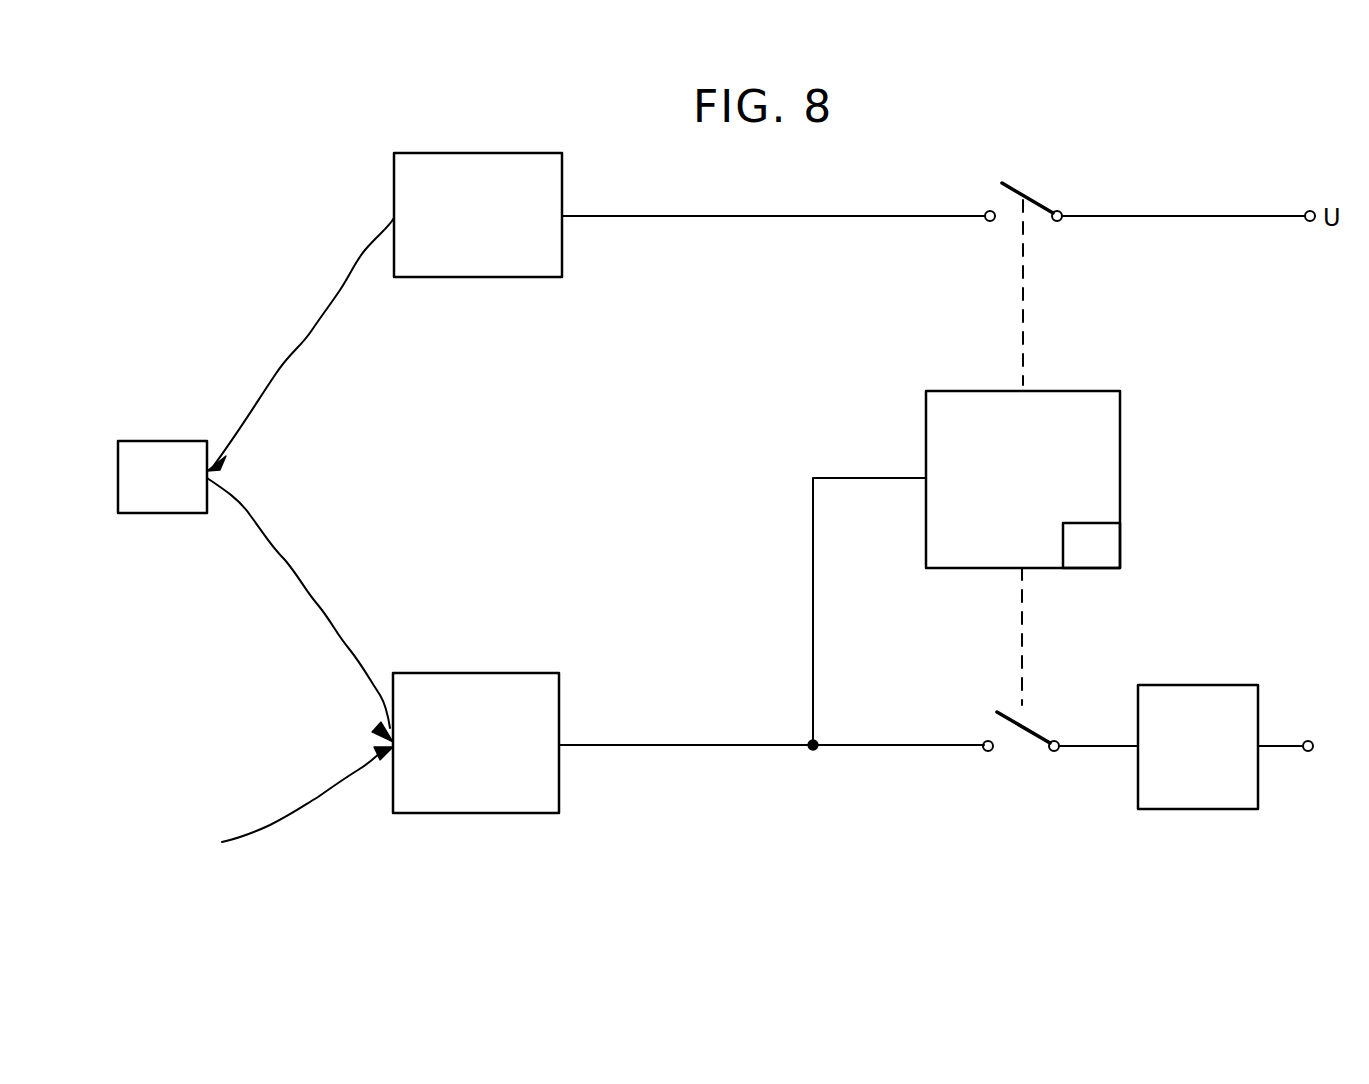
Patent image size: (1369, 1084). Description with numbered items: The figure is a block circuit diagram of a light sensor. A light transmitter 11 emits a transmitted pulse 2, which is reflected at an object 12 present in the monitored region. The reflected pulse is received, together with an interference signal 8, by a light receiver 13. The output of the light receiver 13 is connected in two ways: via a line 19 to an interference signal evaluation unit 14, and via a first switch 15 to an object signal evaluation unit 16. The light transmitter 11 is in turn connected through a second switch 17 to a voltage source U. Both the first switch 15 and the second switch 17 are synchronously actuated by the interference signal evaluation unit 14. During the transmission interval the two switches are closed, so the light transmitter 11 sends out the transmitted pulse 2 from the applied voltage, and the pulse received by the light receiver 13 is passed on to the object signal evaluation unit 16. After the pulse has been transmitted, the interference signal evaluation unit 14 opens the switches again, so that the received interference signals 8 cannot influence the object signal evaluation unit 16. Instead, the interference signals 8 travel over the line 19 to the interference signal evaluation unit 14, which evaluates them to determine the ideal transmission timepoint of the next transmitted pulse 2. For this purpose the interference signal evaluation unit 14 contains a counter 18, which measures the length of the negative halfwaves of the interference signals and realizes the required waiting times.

The transmitted pulse 2 is at (324, 320).
The interference signal 8 is at (278, 823).
The light transmitter 11 is at (486, 174).
The object 12 is at (165, 458).
The light receiver 13 is at (500, 785).
The interference signal evaluation unit 14 is at (1100, 430).
The first switch 15 is at (1033, 758).
The object signal evaluation unit 16 is at (1208, 788).
The second switch 17 is at (1040, 205).
The counter 18 is at (1102, 544).
The line 19 is at (813, 605).